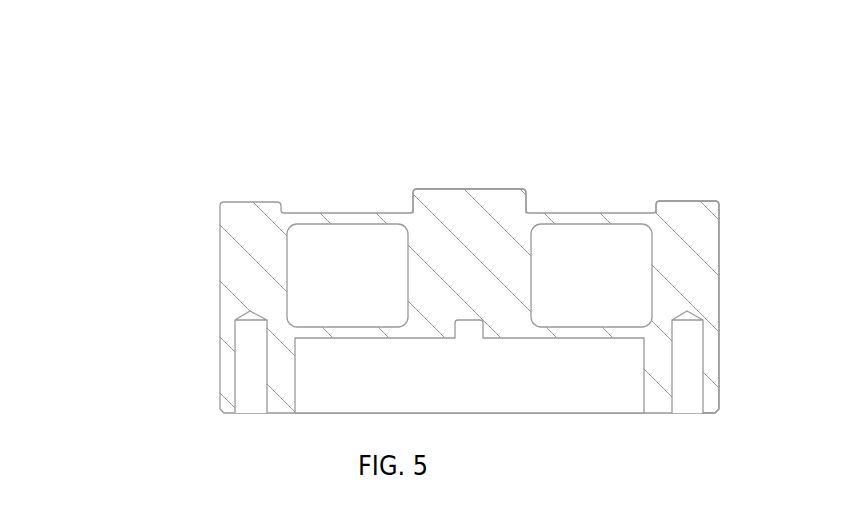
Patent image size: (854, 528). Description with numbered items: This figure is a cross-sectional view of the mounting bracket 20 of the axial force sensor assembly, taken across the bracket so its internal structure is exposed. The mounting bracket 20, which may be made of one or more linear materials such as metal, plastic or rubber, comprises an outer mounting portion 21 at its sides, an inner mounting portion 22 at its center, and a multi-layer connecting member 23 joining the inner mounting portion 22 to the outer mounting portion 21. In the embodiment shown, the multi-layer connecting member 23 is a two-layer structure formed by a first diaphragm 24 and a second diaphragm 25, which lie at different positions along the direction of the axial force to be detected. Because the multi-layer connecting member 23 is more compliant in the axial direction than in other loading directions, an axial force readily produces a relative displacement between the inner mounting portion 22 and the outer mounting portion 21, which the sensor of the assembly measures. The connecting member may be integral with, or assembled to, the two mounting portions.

The mounting bracket 20 is at (455, 136).
The outer mounting portion 21 is at (685, 230).
The inner mounting portion 22 is at (504, 208).
The multi-layer connecting member 23 is at (140, 367).
The first diaphragm 24 is at (340, 218).
The second diaphragm 25 is at (343, 333).